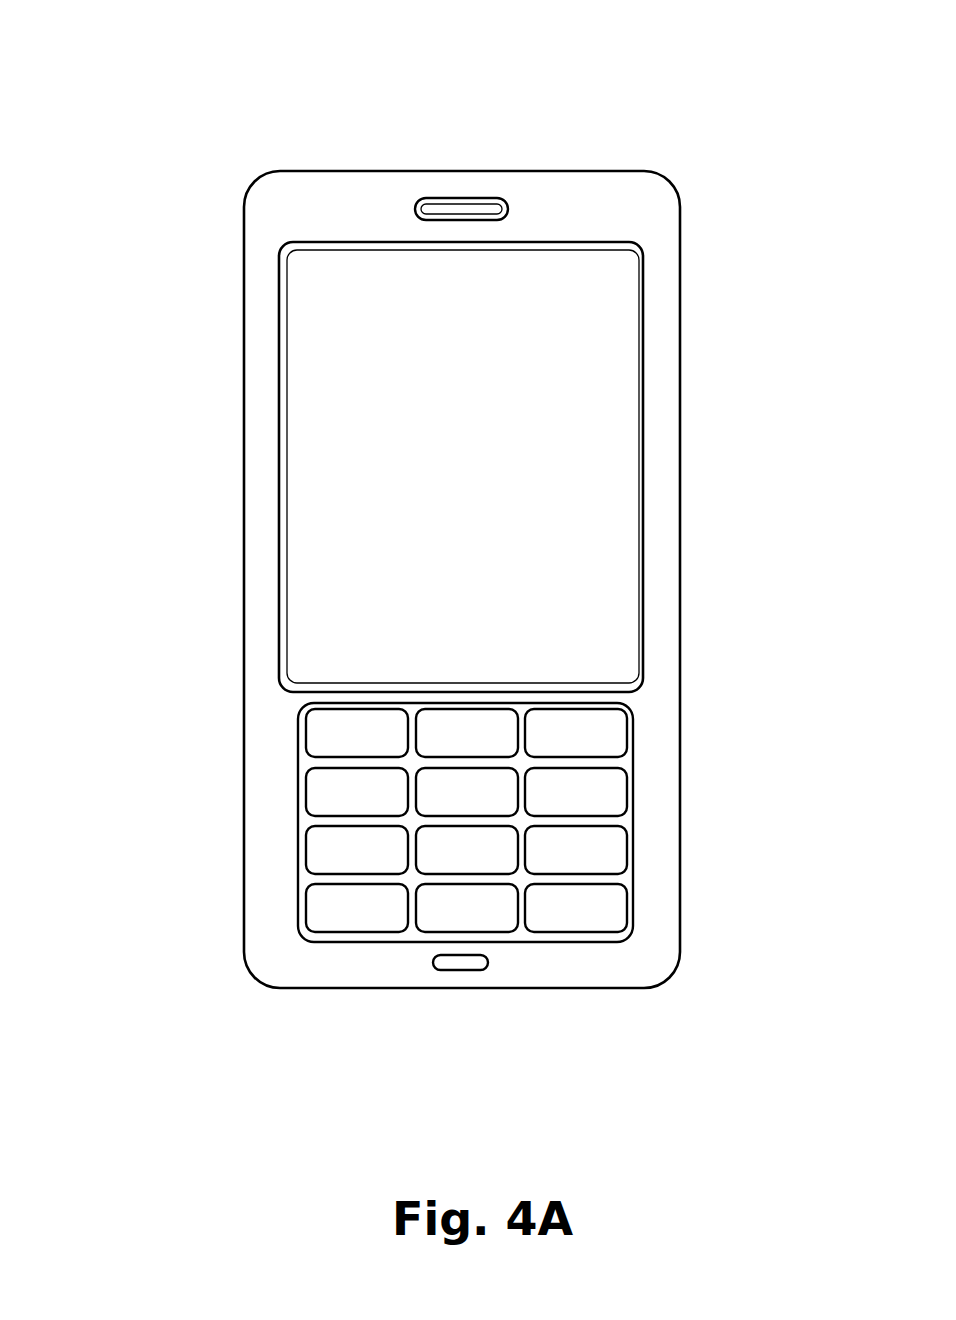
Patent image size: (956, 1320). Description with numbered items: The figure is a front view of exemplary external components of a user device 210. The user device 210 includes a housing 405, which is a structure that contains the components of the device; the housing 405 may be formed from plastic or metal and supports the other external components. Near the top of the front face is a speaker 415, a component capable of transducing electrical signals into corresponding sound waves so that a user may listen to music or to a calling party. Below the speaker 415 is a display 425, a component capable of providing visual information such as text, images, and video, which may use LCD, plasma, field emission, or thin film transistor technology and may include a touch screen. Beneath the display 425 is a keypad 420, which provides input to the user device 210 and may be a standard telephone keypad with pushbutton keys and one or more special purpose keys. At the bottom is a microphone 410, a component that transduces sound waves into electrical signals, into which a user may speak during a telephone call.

The user device 210 is at (245, 44).
The housing 405 is at (244, 430).
The speaker 415 is at (426, 198).
The display 425 is at (586, 242).
The keypad 420 is at (692, 700).
The microphone 410 is at (459, 971).